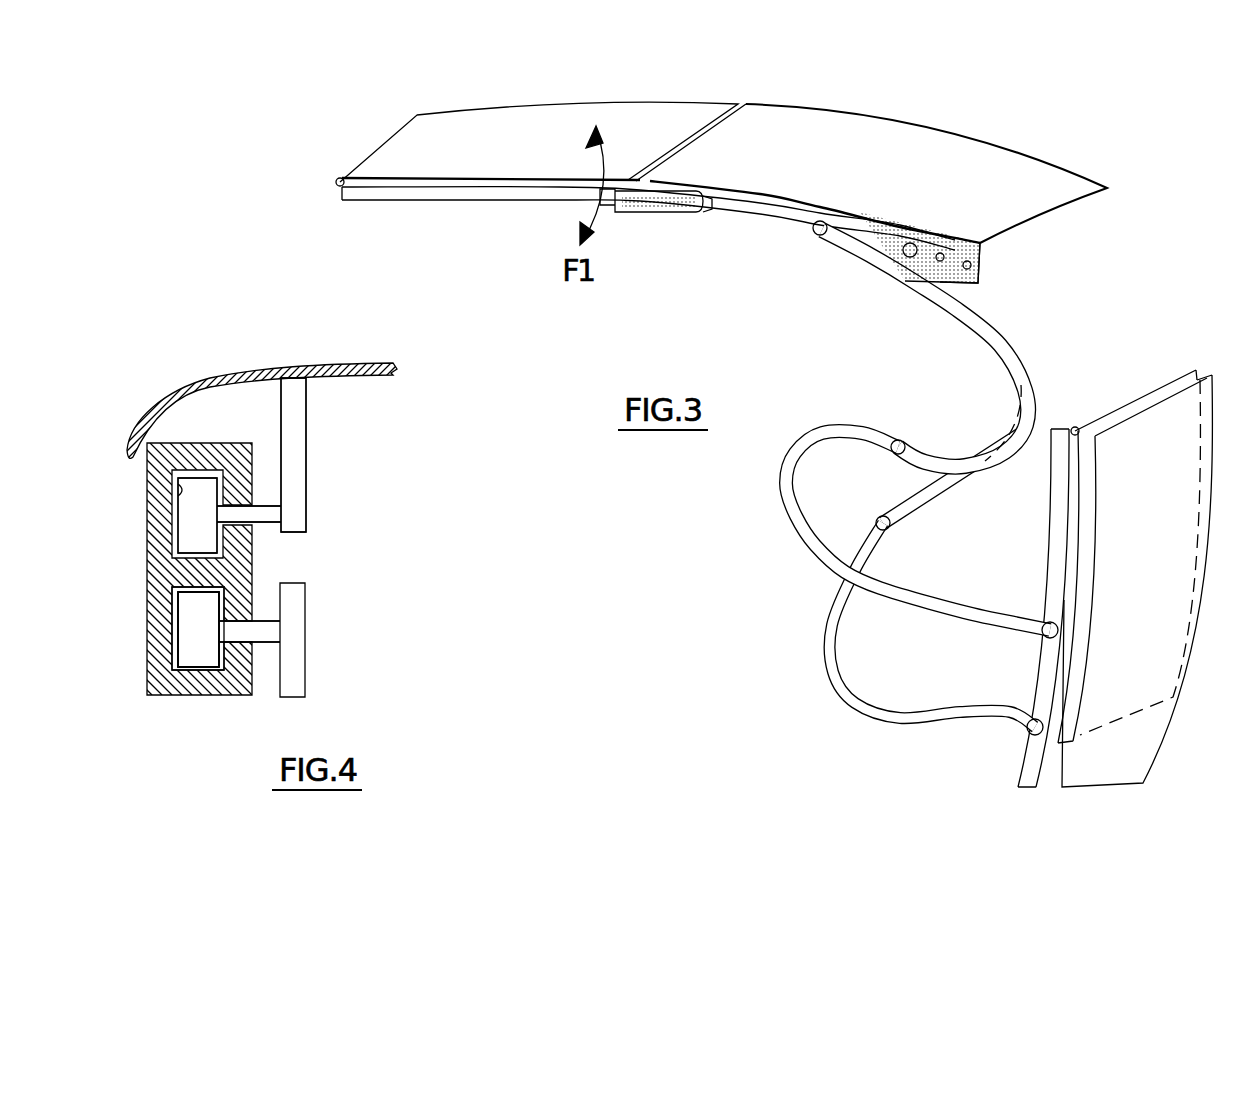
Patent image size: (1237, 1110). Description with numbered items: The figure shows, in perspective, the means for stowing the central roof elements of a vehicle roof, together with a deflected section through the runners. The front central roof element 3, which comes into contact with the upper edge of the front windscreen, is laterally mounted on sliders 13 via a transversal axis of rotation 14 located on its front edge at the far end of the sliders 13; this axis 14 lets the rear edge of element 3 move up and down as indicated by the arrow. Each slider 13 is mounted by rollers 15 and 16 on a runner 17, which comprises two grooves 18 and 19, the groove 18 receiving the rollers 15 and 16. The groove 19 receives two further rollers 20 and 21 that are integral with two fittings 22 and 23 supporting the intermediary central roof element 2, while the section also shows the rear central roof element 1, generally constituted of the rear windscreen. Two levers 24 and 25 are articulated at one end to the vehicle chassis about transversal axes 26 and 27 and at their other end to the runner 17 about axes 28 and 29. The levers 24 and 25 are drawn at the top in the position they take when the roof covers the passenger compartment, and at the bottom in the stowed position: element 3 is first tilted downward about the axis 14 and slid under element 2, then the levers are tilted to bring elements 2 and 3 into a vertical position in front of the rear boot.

In FIG. 4, the rear central roof element 1 is at (243, 372).
In FIG. 3, the intermediary central roof element 2 is at (775, 140).
In FIG. 3, the front central roof element 3 is at (535, 128).
In FIG. 3, the slider 13 is at (520, 196).
In FIG. 4, the slider 13 is at (303, 661).
In FIG. 3, the axis 14 is at (338, 180).
In FIG. 3, the roller 15 is at (632, 214).
In FIG. 4, the roller 15 is at (193, 650).
In FIG. 3, the roller 16 is at (705, 216).
In FIG. 4, the roller 16 is at (198, 629).
In FIG. 3, the runner 17 is at (742, 213).
In FIG. 4, the runner 17 is at (175, 573).
In FIG. 4, the groove 18 is at (225, 640).
In FIG. 4, the groove 19 is at (172, 476).
In FIG. 3, the roller 20 is at (866, 225).
In FIG. 4, the roller 20 is at (190, 523).
In FIG. 3, the roller 21 is at (948, 233).
In FIG. 4, the roller 21 is at (229, 572).
In FIG. 3, the fitting 22 is at (893, 215).
In FIG. 4, the fitting 22 is at (297, 452).
In FIG. 3, the fitting 23 is at (943, 232).
In FIG. 4, the fitting 23 is at (293, 455).
In FIG. 3, the lever 24 is at (890, 272).
In FIG. 3, the lever 25 is at (943, 317).
In FIG. 3, the transversal axis 26 is at (892, 530).
In FIG. 3, the transversal axis 27 is at (903, 440).
In FIG. 3, the axis 28 is at (953, 282).
In FIG. 3, the axis 29 is at (818, 237).